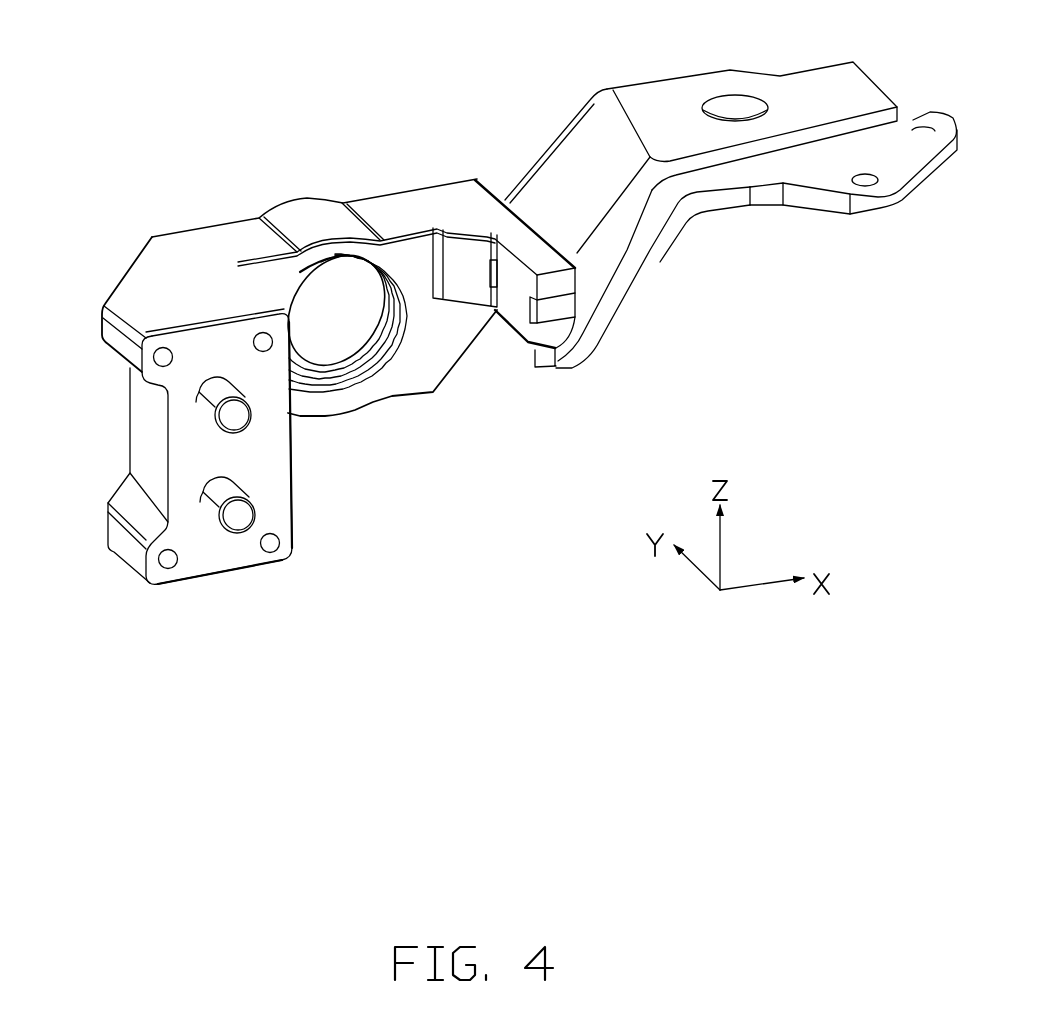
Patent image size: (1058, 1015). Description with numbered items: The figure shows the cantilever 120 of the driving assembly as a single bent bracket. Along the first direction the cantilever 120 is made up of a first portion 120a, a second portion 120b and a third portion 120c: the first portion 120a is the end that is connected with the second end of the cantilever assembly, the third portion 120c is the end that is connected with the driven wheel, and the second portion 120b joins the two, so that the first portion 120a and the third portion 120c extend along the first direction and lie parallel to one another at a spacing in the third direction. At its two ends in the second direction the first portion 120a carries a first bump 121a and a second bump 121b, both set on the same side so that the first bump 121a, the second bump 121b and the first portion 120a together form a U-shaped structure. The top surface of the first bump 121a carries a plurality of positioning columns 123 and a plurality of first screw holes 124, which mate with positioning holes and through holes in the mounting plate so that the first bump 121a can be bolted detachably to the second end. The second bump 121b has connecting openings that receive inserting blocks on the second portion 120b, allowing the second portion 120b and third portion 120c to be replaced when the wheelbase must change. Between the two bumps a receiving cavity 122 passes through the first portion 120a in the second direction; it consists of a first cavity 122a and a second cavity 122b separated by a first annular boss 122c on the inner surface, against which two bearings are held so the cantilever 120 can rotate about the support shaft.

The cantilever 120 is at (483, 32).
The first portion 120a is at (330, 212).
The second portion 120b is at (577, 147).
The third portion 120c is at (590, 43).
The first bump 121a is at (44, 265).
The second bump 121b is at (528, 248).
The receiving cavity 122 is at (520, 463).
The first cavity 122a is at (339, 387).
The second cavity 122b is at (352, 345).
The first annular boss 122c is at (377, 317).
The positioning columns 123 is at (238, 513).
The first screw holes 124 is at (110, 205).